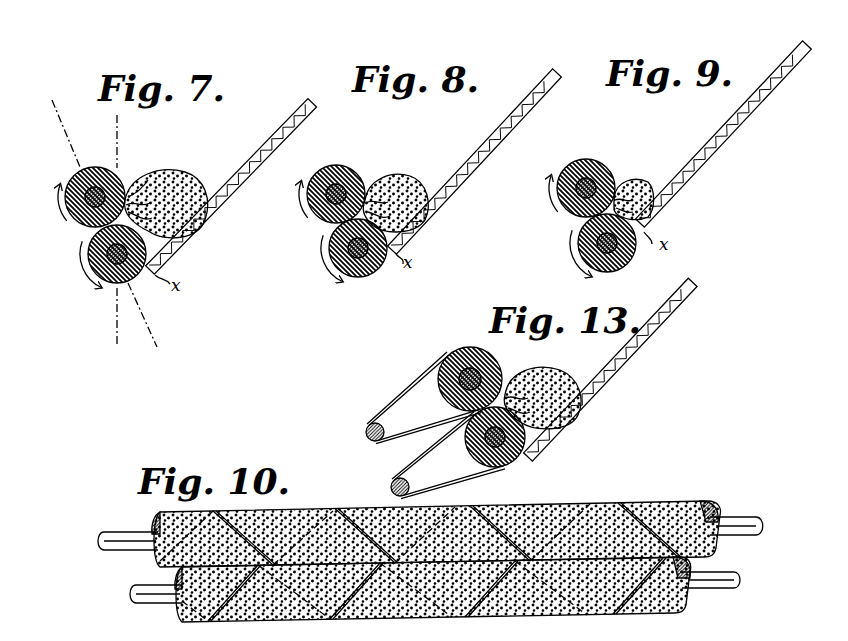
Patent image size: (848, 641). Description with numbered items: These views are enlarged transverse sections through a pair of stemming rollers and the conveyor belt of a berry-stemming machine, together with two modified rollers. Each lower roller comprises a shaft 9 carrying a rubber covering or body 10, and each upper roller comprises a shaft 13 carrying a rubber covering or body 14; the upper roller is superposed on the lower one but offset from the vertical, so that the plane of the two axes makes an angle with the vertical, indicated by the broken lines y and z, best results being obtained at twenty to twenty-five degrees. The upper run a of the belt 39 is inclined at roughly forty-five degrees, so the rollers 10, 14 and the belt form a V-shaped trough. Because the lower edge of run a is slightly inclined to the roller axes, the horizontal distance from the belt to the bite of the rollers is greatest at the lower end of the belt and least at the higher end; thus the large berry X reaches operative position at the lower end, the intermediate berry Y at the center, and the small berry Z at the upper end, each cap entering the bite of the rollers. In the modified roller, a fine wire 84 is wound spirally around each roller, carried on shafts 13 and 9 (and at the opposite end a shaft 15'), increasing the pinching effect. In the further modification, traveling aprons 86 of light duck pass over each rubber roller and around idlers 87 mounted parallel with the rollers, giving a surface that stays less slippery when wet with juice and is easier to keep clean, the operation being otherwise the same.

In FIG. 7, the belt 39 is at (302, 102).
In FIG. 8, the belt 39 is at (551, 78).
In FIG. 9, the belt 39 is at (788, 60).
In FIG. 13, the belt 39 is at (630, 370).
In FIG. 8, the rubber covering or body 14 is at (337, 166).
In FIG. 9, the rubber covering or body 14 is at (590, 162).
In FIG. 13, the rubber covering or body 14 is at (455, 350).
In FIG. 10, the rubber covering or body 14 is at (681, 511).
In FIG. 8, the rubber covering or body 10 is at (365, 276).
In FIG. 9, the rubber covering or body 10 is at (622, 265).
In FIG. 13, the rubber covering or body 10 is at (502, 468).
In FIG. 10, the rubber covering or body 10 is at (655, 600).
In FIG. 13, the traveling apron 86 is at (408, 388).
In FIG. 13, the idler 87 is at (368, 428).
In FIG. 10, the wire 84 is at (512, 530).
In FIG. 10, the shaft 13 is at (748, 522).
In FIG. 10, the shaft 9 is at (722, 588).
In FIG. 10, the roller shaft 15' is at (195, 586).
In FIG. 7, the upper run of the belt a is at (258, 150).
In FIG. 8, the upper run of the belt a is at (482, 152).
In FIG. 9, the upper run of the belt a is at (710, 152).
In FIG. 7, the broken line y is at (98, 227).
In FIG. 7, the broken line z is at (122, 242).
In FIG. 7, the fibre sliver (large) X is at (164, 185).
In FIG. 8, the fibre sliver (medium) Y is at (399, 183).
In FIG. 9, the fibre sliver (small) Z is at (636, 184).